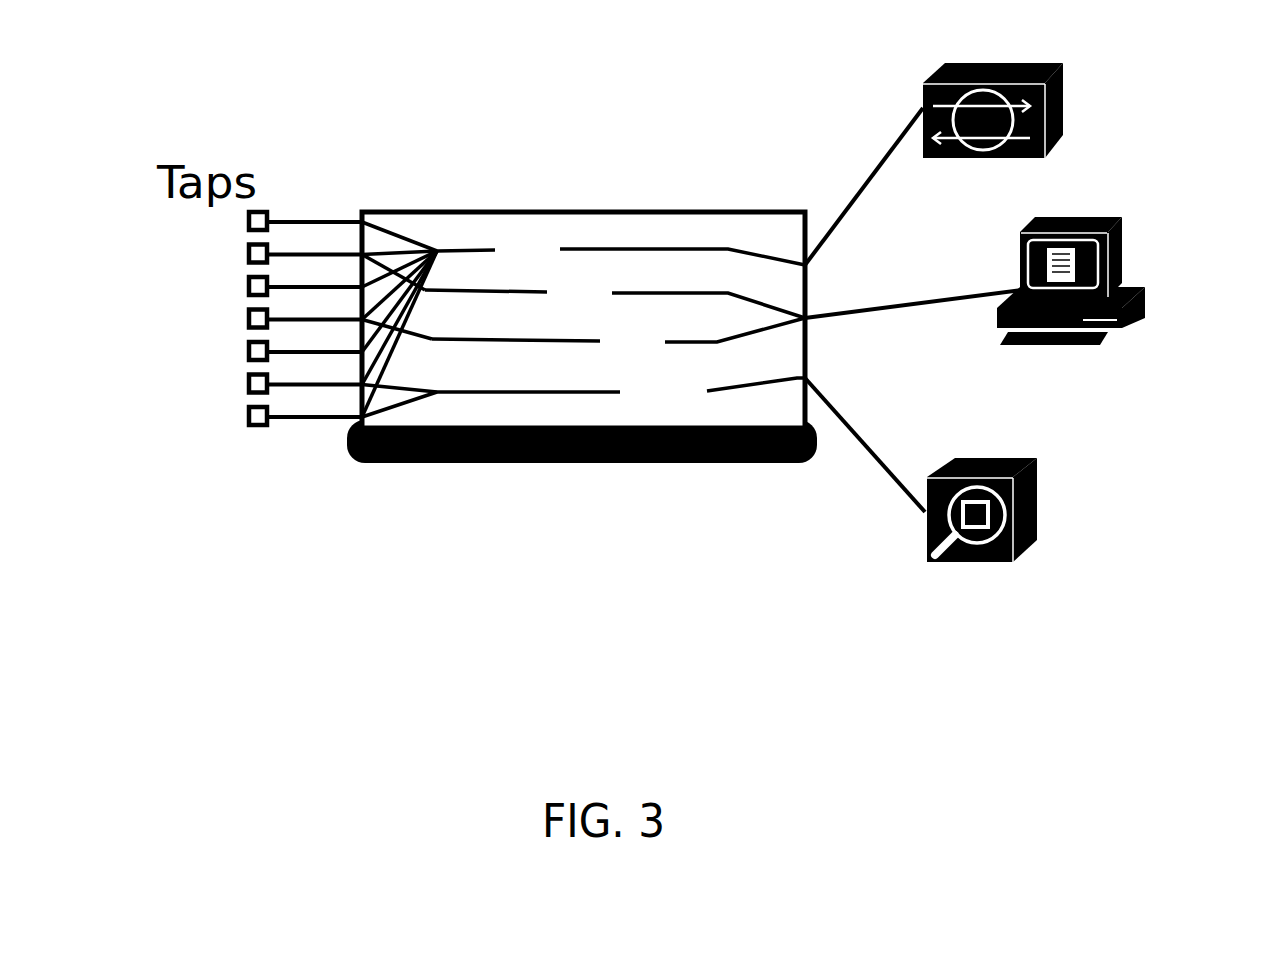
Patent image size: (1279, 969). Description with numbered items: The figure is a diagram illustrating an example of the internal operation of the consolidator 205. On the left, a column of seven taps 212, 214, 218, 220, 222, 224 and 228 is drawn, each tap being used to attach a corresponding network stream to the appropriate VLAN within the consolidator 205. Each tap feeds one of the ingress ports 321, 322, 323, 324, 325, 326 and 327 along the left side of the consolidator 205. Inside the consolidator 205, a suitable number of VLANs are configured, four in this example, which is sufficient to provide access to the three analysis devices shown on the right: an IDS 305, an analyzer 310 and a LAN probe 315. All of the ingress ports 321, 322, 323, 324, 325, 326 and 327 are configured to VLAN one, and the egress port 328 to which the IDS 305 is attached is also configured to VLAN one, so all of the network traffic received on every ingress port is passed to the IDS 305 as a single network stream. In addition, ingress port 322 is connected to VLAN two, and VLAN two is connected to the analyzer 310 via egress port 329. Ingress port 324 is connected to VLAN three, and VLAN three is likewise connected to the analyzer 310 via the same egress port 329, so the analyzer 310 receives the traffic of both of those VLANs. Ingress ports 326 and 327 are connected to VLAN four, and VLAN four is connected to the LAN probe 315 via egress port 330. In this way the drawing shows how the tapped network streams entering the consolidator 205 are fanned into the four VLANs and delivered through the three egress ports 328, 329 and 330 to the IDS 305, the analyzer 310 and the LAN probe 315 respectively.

The consolidator 205 is at (593, 158).
The tap 212 is at (247, 219).
The tap 214 is at (247, 255).
The tap 218 is at (247, 287).
The tap 220 is at (247, 320).
The tap 222 is at (247, 355).
The tap 224 is at (247, 388).
The tap 228 is at (247, 420).
The ingress port 321 is at (315, 211).
The ingress port 322 is at (315, 245).
The ingress port 323 is at (315, 276).
The ingress port 324 is at (315, 310).
The ingress port 325 is at (315, 341).
The ingress port 326 is at (315, 373).
The ingress port 327 is at (315, 406).
The egress port 328 is at (812, 268).
The egress port 329 is at (812, 323).
The egress port 330 is at (812, 378).
The IDS 305 is at (1065, 63).
The analyzer 310 is at (1122, 243).
The LAN probe 315 is at (1038, 487).